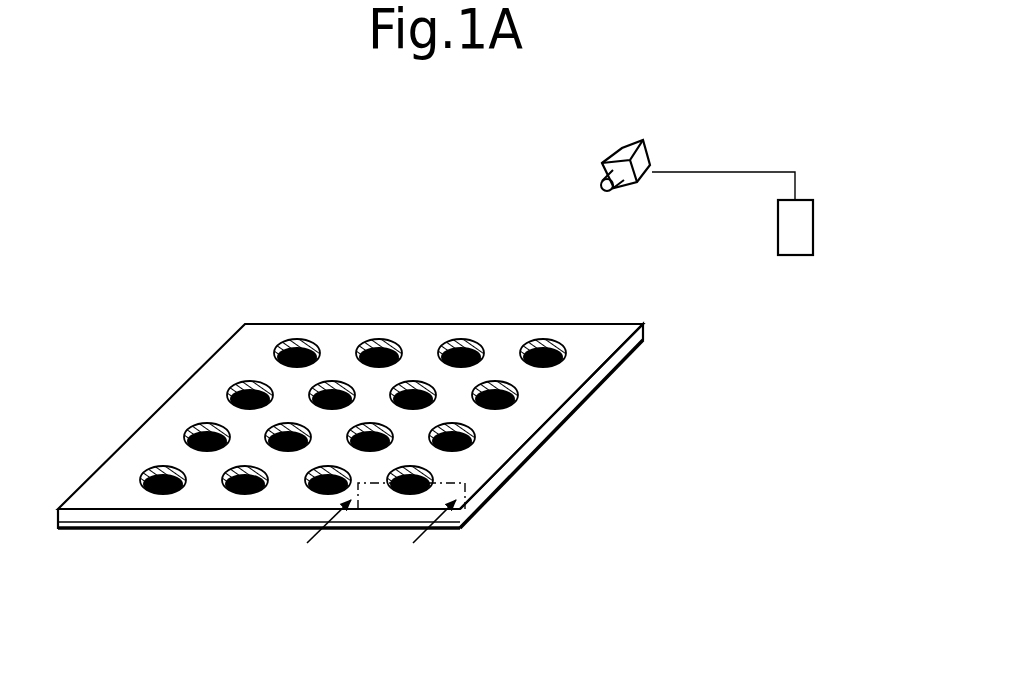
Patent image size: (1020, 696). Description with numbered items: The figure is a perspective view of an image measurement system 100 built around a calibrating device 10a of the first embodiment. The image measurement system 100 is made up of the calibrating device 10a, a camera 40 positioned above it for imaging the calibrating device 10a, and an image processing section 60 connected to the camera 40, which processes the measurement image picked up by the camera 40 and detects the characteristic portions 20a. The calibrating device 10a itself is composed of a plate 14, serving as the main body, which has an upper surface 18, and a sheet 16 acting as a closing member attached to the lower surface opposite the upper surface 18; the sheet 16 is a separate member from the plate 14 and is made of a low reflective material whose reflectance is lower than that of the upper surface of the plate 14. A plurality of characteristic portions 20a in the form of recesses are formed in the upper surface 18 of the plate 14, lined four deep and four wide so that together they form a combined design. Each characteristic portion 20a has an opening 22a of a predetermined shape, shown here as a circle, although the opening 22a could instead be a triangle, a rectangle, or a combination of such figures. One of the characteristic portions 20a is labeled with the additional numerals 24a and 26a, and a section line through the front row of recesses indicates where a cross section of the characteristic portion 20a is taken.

The image measurement system 100 is at (186, 257).
The calibrating device 10a is at (635, 271).
The plate 14 is at (617, 323).
The sheet 16 is at (217, 529).
The upper surface 18 is at (592, 357).
The characteristic portion 20a is at (642, 480).
The opening 22a is at (465, 423).
The second portion of feature 24a is at (472, 434).
The third portion of feature 26a is at (458, 448).
The camera 40 is at (653, 160).
The image processing section 60 is at (814, 233).